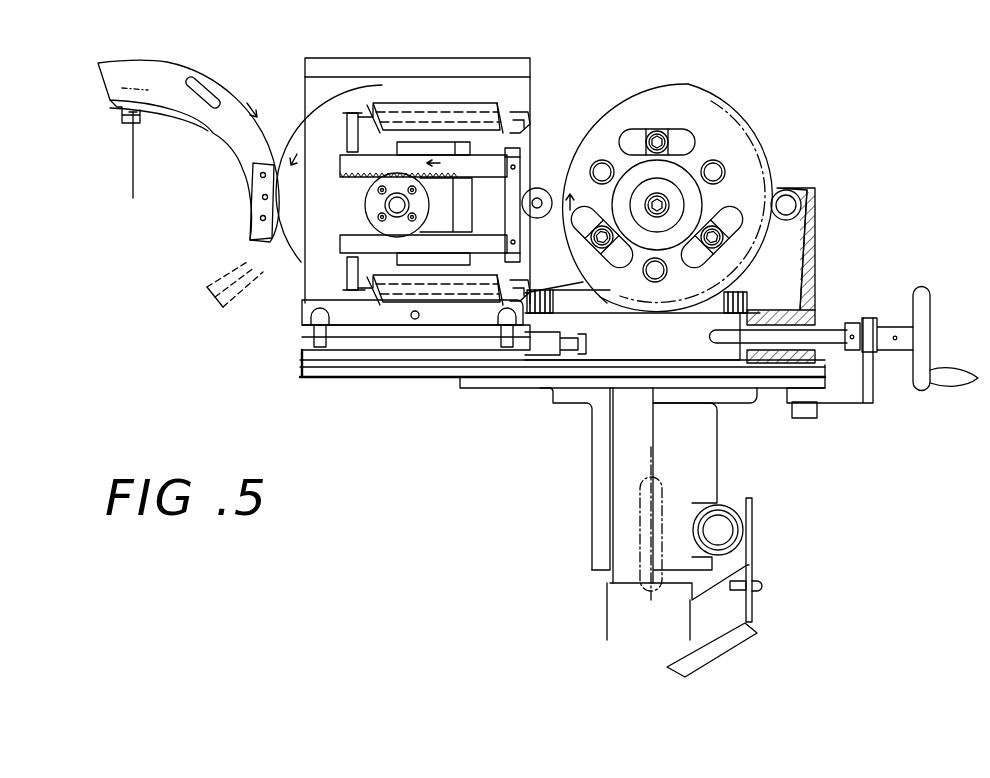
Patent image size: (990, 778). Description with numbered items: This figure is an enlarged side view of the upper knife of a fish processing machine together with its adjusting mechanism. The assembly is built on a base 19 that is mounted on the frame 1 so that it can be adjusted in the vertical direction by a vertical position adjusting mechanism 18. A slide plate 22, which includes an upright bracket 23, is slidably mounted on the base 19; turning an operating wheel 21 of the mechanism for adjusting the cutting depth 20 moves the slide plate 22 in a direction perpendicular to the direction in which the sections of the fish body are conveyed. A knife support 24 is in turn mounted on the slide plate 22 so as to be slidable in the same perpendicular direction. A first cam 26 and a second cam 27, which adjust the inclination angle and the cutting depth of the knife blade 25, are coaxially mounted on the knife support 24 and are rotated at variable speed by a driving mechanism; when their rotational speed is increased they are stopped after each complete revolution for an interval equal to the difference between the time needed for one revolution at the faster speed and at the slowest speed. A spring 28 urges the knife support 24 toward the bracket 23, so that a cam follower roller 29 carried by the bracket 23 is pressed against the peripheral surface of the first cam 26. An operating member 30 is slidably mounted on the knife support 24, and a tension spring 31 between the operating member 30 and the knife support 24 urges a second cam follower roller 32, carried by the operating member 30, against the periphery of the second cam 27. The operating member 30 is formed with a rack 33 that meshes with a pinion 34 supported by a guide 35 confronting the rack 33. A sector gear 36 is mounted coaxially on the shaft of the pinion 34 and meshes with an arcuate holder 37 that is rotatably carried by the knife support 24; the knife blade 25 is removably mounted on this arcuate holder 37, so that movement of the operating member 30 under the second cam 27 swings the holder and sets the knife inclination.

The frame 1 is at (730, 643).
The vertical position adjusting mechanism 18 is at (703, 452).
The base 19 is at (472, 380).
The mechanism for adjusting the cutting depth 20 is at (820, 322).
The operating wheel 21 is at (932, 305).
The slide plate 22 is at (378, 362).
The upright bracket 23 is at (815, 228).
The knife support 24 is at (360, 316).
The knife blade 25 is at (134, 170).
The first cam 26 is at (640, 88).
The second cam 27 is at (752, 127).
The spring 28 is at (747, 306).
The cam follower roller 29 is at (784, 189).
The operating member 30 is at (493, 153).
The tension spring 31 is at (435, 102).
The cam follower roller 32 is at (538, 188).
The rack 33 is at (442, 173).
The pinion 34 is at (378, 208).
The guide 35 is at (485, 243).
The sector gear 36 is at (298, 242).
The arcuate holder 37 is at (170, 66).